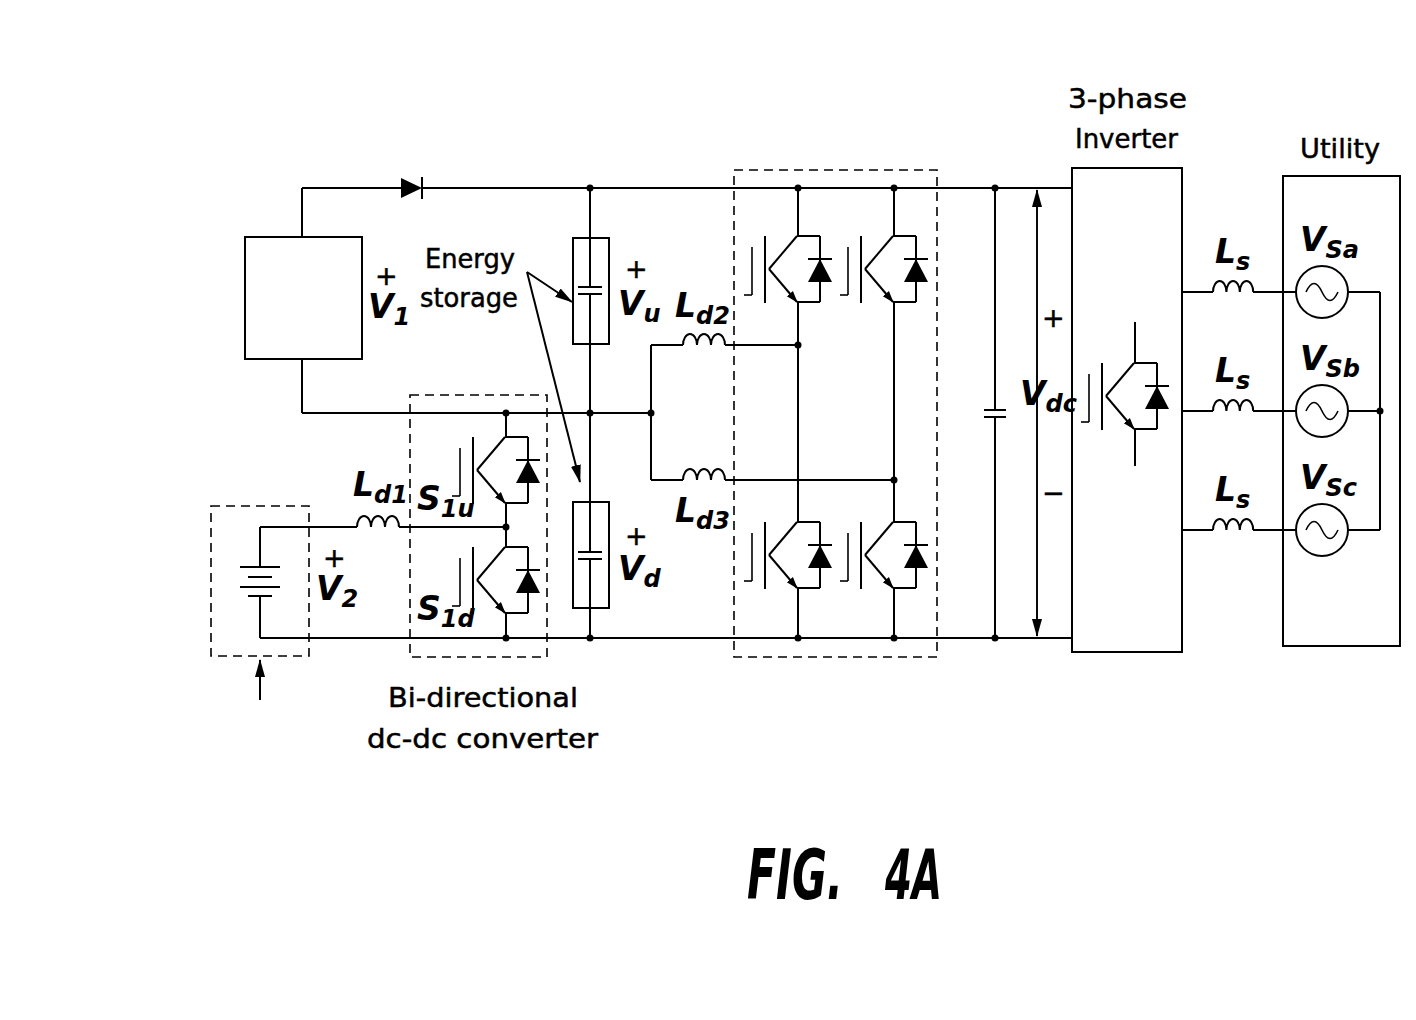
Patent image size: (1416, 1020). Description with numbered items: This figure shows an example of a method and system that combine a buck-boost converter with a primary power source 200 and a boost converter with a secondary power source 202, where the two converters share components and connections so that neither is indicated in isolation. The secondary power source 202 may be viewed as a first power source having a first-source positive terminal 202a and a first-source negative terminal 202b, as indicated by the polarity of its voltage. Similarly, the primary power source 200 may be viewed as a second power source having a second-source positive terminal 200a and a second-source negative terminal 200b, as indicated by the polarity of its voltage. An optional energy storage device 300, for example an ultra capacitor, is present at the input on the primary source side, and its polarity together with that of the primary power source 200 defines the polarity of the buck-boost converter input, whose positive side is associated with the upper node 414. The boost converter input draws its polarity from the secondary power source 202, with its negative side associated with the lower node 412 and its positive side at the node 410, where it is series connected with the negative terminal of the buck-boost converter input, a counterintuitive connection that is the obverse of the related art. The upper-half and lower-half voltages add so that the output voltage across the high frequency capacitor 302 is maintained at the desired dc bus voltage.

The primary power source 200 is at (225, 360).
The second-source positive terminal 200a is at (272, 186).
The second-source negative terminal 200b is at (275, 413).
The secondary power source 202 is at (193, 656).
The first-source positive terminal 202a is at (241, 527).
The first-source negative terminal 202b is at (241, 632).
The energy storage device 300 is at (578, 226).
The high frequency capacitor 302 is at (996, 166).
The series connection node 410 is at (662, 413).
The boost converter input negative terminal node 412 is at (681, 652).
The buck-boost converter input positive terminal node 414 is at (681, 161).